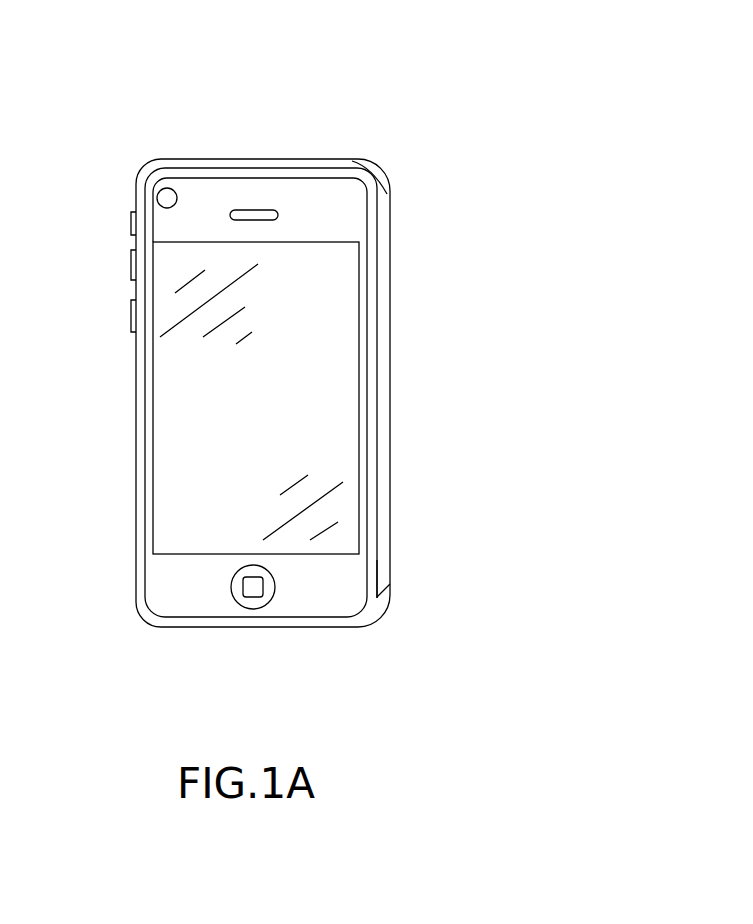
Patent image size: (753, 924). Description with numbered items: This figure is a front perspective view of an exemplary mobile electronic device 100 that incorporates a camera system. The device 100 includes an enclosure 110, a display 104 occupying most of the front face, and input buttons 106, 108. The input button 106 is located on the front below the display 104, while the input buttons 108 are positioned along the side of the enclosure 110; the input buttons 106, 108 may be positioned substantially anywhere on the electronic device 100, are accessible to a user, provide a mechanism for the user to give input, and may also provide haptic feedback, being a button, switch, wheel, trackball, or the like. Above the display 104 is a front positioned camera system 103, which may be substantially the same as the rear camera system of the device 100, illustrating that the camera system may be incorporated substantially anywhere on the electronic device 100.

The mobile electronic device 100 is at (470, 104).
The front positioned camera system 103 is at (180, 185).
The display 104 is at (343, 343).
The input button 106 is at (255, 588).
The input buttons 108 is at (131, 222).
The enclosure 110 is at (377, 582).